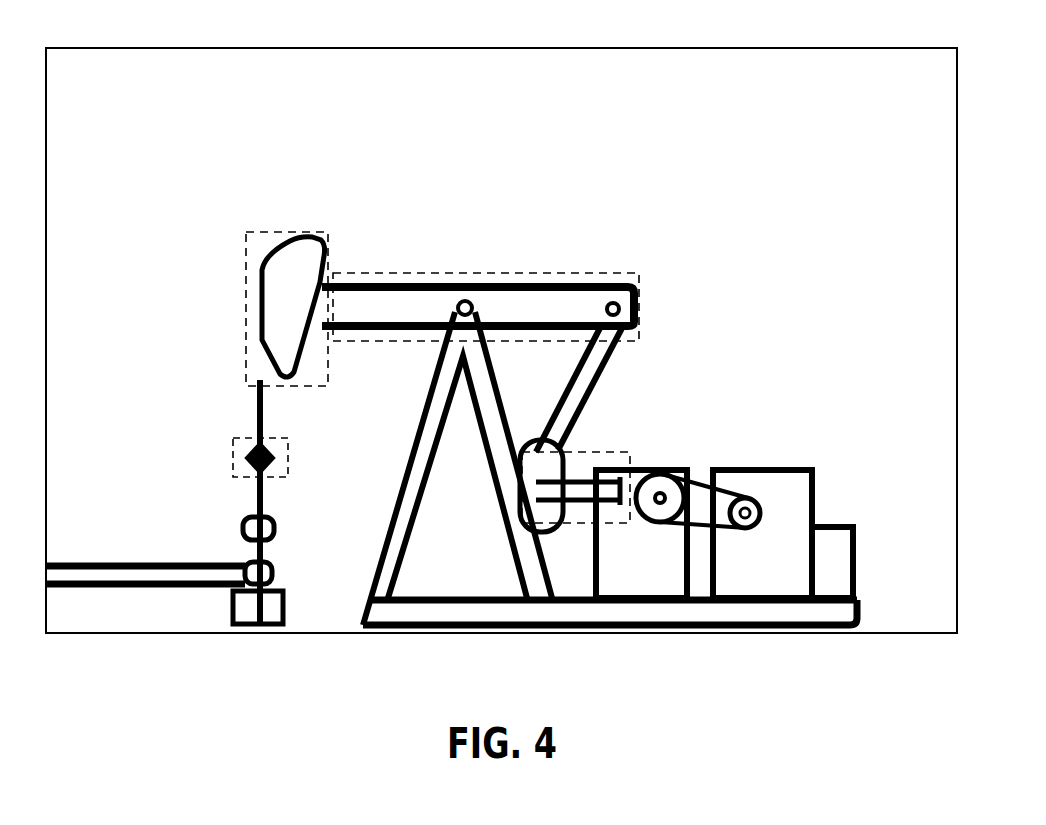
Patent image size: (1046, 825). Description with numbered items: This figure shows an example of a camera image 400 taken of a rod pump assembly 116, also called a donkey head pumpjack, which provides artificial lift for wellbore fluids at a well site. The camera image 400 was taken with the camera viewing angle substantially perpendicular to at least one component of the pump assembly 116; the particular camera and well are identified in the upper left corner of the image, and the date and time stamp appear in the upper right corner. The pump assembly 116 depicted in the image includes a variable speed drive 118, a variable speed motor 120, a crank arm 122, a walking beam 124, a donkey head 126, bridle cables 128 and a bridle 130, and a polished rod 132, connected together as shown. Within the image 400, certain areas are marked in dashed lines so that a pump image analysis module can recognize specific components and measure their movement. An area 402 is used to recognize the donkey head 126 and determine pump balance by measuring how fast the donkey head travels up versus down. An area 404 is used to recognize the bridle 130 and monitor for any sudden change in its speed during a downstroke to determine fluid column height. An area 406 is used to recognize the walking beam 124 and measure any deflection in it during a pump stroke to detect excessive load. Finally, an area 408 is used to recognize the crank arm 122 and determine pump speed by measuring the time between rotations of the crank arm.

The rod pump assembly 116 is at (784, 294).
The variable speed drive 118 is at (836, 575).
The variable speed motor 120 is at (792, 500).
The crank arm 122 is at (636, 441).
The walking beam 124 is at (457, 286).
The donkey head 126 is at (305, 236).
The bridle cables 128 is at (252, 410).
The bridle 130 is at (247, 458).
The polished rod 132 is at (247, 498).
The camera image 400 is at (518, 95).
The area 402 is at (244, 293).
The area 404 is at (294, 458).
The area 406 is at (548, 270).
The area 408 is at (600, 448).